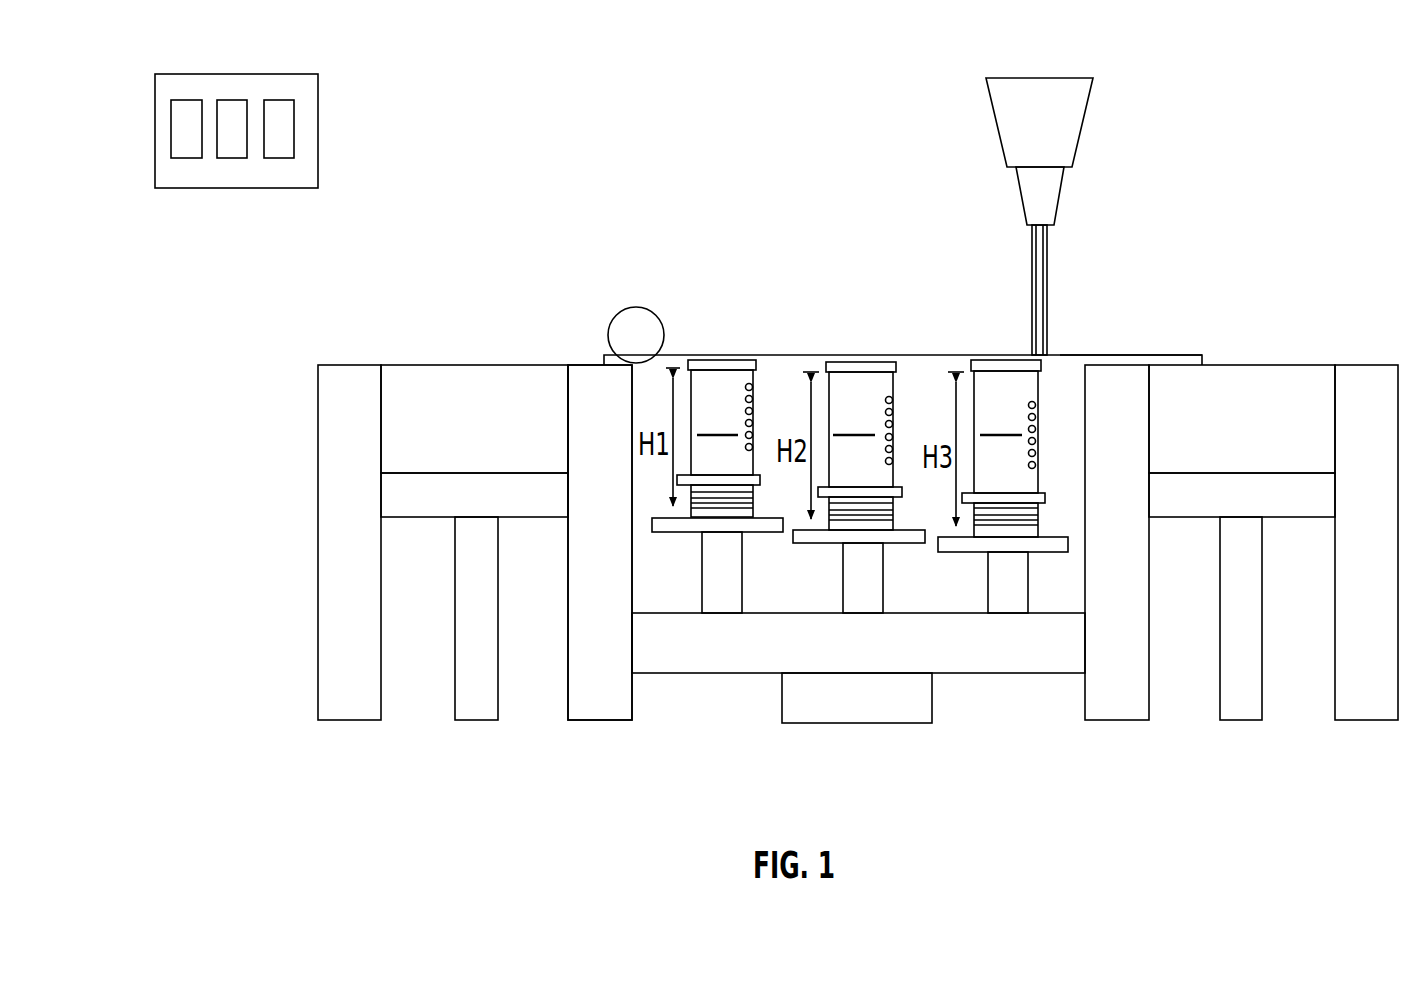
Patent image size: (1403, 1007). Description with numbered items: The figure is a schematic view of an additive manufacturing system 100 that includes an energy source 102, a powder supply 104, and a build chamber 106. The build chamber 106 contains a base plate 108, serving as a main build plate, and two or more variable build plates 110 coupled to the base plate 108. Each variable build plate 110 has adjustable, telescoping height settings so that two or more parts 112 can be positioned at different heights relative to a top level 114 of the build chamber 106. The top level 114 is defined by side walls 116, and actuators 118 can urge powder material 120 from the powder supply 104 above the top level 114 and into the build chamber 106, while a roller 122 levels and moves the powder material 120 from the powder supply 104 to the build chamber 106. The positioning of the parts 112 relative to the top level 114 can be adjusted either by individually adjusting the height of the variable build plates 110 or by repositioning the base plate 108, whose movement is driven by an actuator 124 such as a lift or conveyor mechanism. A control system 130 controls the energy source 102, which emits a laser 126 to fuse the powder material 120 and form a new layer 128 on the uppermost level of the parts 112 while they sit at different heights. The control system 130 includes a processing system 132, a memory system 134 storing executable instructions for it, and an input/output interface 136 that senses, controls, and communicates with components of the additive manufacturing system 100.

The additive manufacturing system 100 is at (745, 130).
The energy source 102 is at (993, 117).
The powder supply 104 is at (447, 365).
The build chamber 106 is at (784, 352).
The base plate 108 is at (687, 673).
The variable build plates 110 is at (700, 608).
The parts 112 is at (861, 448).
The top level 114 is at (582, 365).
The side walls 116 is at (318, 405).
The actuators 118 is at (470, 720).
The powder material 120 is at (1125, 355).
The roller 122 is at (635, 307).
The actuator 124 is at (856, 723).
The laser 126 is at (1048, 253).
The new layer 128 is at (721, 352).
The control system 130 is at (155, 147).
The processing system 132 is at (181, 100).
The memory system 134 is at (234, 100).
The input/output interface 136 is at (290, 100).